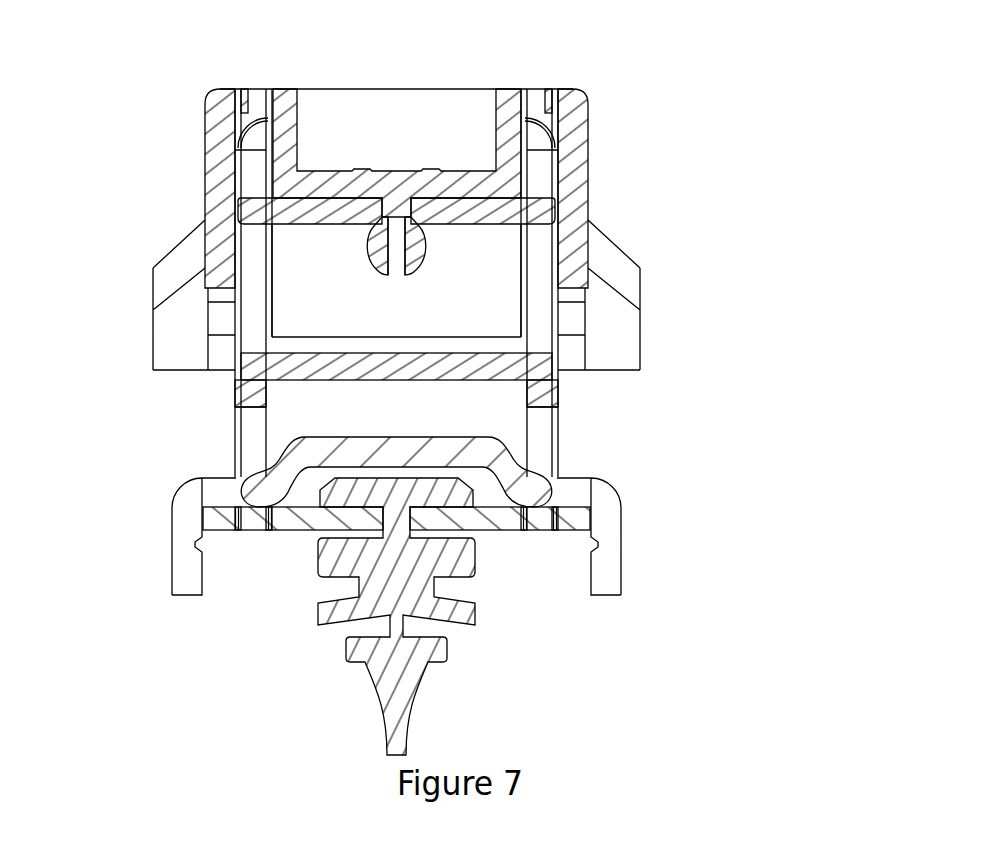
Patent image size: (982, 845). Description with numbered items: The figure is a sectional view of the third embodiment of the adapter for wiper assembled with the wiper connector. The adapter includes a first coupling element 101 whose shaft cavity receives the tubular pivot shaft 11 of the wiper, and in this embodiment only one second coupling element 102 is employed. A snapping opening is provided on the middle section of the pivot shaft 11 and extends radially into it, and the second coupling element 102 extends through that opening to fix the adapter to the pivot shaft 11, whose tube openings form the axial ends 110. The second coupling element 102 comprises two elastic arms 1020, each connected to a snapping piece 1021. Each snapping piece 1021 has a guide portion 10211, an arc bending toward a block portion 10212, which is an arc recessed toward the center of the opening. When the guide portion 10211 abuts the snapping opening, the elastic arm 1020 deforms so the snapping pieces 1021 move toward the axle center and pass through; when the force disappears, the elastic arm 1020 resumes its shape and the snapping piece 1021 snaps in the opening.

The first coupling element 101 is at (393, 173).
The elastic arm 1020 is at (382, 217).
The snapping piece 1021 is at (555, 226).
The guide portion 10211 is at (425, 251).
The block portion 10212 is at (418, 232).
The second coupling element 102 is at (452, 285).
The axial end 110 is at (250, 365).
The pivot shaft 11 is at (498, 367).